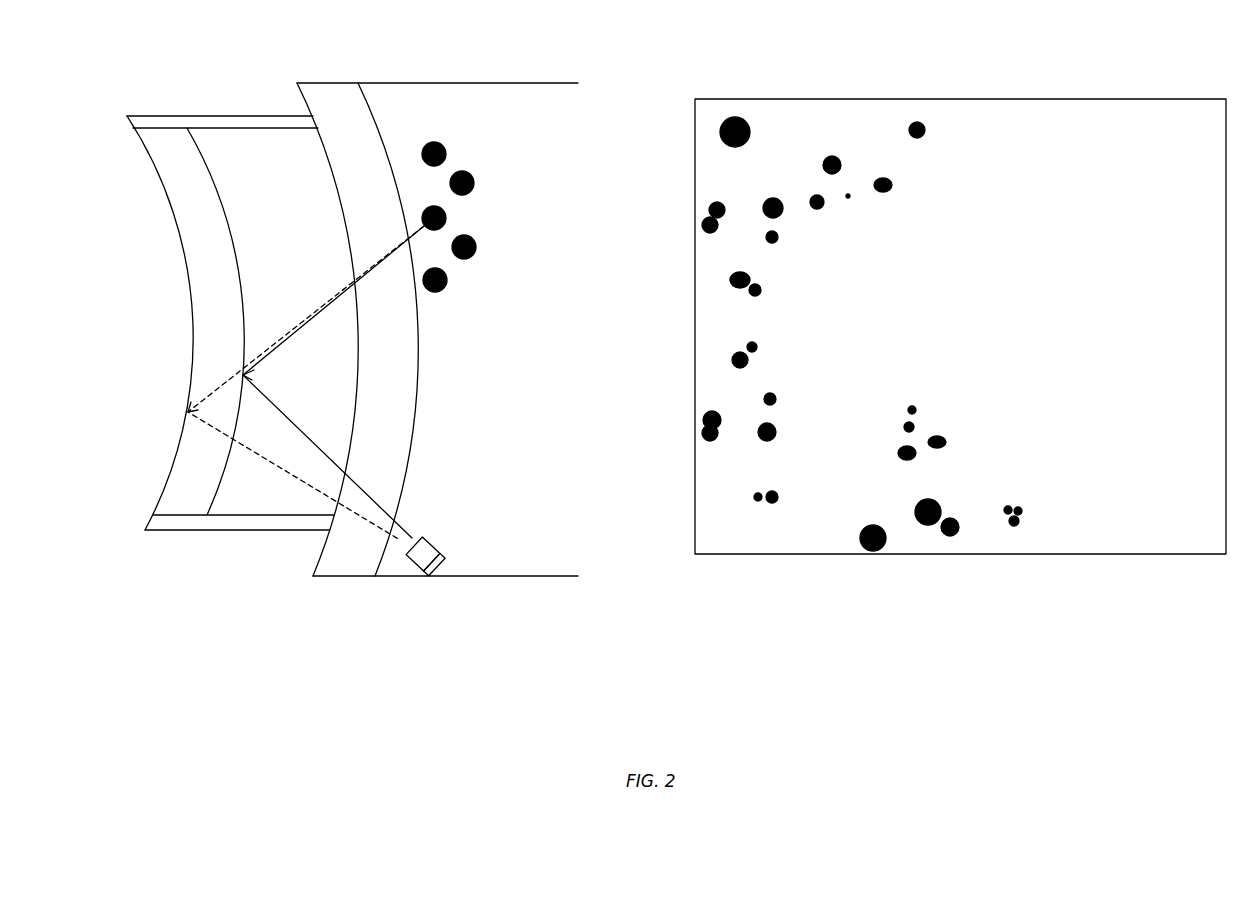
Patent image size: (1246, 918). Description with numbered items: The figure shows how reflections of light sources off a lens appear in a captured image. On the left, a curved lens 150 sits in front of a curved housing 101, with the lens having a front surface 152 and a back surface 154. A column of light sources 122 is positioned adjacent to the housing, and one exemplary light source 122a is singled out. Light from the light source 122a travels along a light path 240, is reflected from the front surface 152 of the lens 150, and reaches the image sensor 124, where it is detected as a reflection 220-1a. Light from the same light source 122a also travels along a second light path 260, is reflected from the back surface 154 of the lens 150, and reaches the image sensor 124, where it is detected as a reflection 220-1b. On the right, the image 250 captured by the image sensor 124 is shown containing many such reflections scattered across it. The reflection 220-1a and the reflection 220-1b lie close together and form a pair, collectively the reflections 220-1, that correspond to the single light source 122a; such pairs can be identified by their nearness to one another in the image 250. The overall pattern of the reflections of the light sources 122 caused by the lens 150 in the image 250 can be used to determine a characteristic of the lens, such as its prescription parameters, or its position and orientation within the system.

The housing 101 is at (423, 83).
The light sources 122 is at (481, 192).
The light source 122a is at (448, 215).
The image sensor 124 is at (415, 565).
The lens 150 is at (204, 323).
The front surface 152 is at (225, 208).
The back surface 154 is at (192, 313).
The light path 240 is at (286, 412).
The light path 260 is at (258, 467).
The image 250 is at (1226, 82).
The reflections 220-1 is at (863, 343).
The reflection 220-1a is at (760, 346).
The reflection 220-1b is at (802, 369).